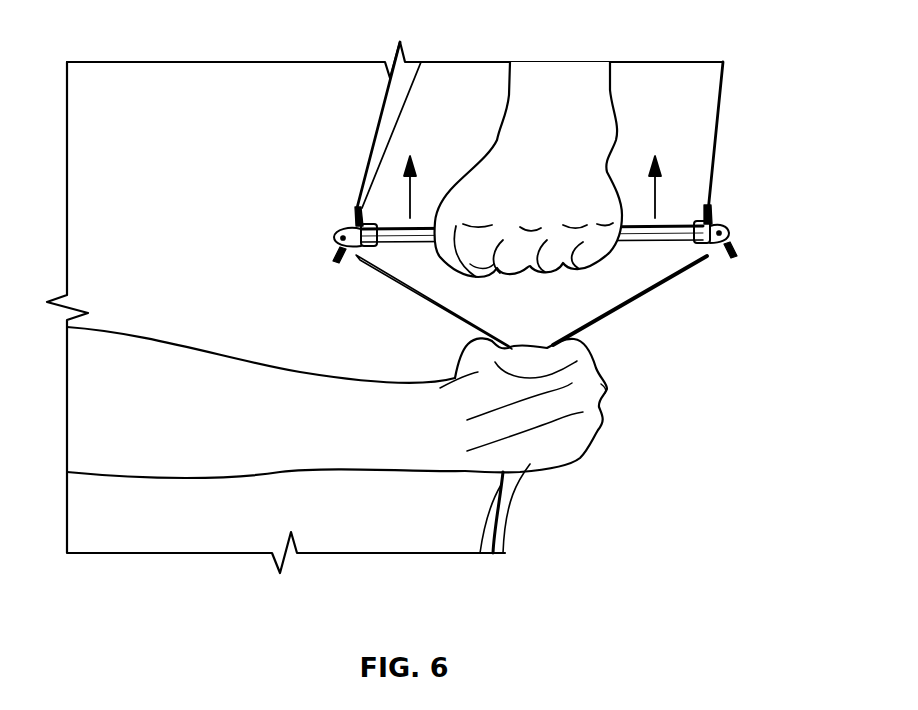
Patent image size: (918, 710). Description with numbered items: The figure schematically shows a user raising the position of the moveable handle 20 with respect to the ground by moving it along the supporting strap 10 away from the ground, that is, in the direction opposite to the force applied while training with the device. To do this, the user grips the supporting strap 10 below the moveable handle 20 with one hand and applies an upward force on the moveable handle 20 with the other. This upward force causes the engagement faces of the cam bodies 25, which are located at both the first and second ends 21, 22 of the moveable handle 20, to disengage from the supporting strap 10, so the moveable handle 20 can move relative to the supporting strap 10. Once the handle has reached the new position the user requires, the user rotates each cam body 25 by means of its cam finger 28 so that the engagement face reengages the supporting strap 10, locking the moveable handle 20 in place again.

The supporting strap 10 is at (534, 291).
The moveable handle 20 is at (636, 243).
The first end 21 is at (360, 262).
The second end 22 is at (693, 246).
The cam body 25 is at (336, 235).
The cam finger 28 is at (336, 255).